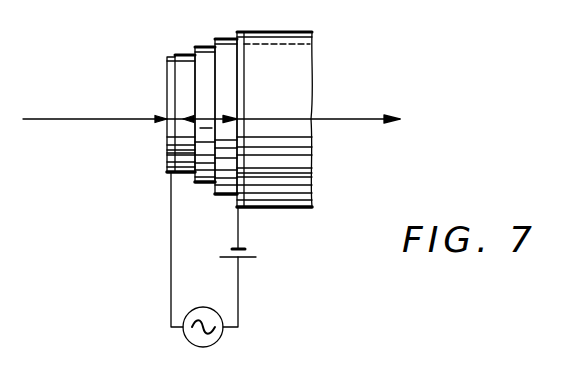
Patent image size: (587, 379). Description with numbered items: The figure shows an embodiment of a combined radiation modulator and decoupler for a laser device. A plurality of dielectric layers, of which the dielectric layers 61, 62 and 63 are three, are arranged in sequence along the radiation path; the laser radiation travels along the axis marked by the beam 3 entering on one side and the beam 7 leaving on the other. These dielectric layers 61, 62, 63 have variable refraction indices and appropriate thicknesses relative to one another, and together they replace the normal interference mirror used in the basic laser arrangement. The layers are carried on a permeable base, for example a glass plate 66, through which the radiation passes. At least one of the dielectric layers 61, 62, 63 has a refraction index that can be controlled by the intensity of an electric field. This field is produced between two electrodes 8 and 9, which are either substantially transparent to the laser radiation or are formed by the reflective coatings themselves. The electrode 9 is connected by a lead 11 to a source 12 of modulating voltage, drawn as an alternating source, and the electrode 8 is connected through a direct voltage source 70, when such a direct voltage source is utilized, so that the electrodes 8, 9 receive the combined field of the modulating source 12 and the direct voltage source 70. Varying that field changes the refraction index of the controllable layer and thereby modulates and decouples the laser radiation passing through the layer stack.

The electron beam (incident) 3 is at (52, 120).
The electron beam (exiting) along axis 7 is at (340, 122).
The dielectric layer 61 is at (181, 54).
The dielectric layer 62 is at (208, 47).
The dielectric layer 63 is at (225, 38).
The glass plate 66 is at (268, 34).
The electrode 8 is at (238, 173).
The electrode 9 is at (168, 153).
The lead 11 is at (171, 272).
The direct voltage source 70 is at (256, 253).
The source of modulating voltage 12 is at (221, 338).